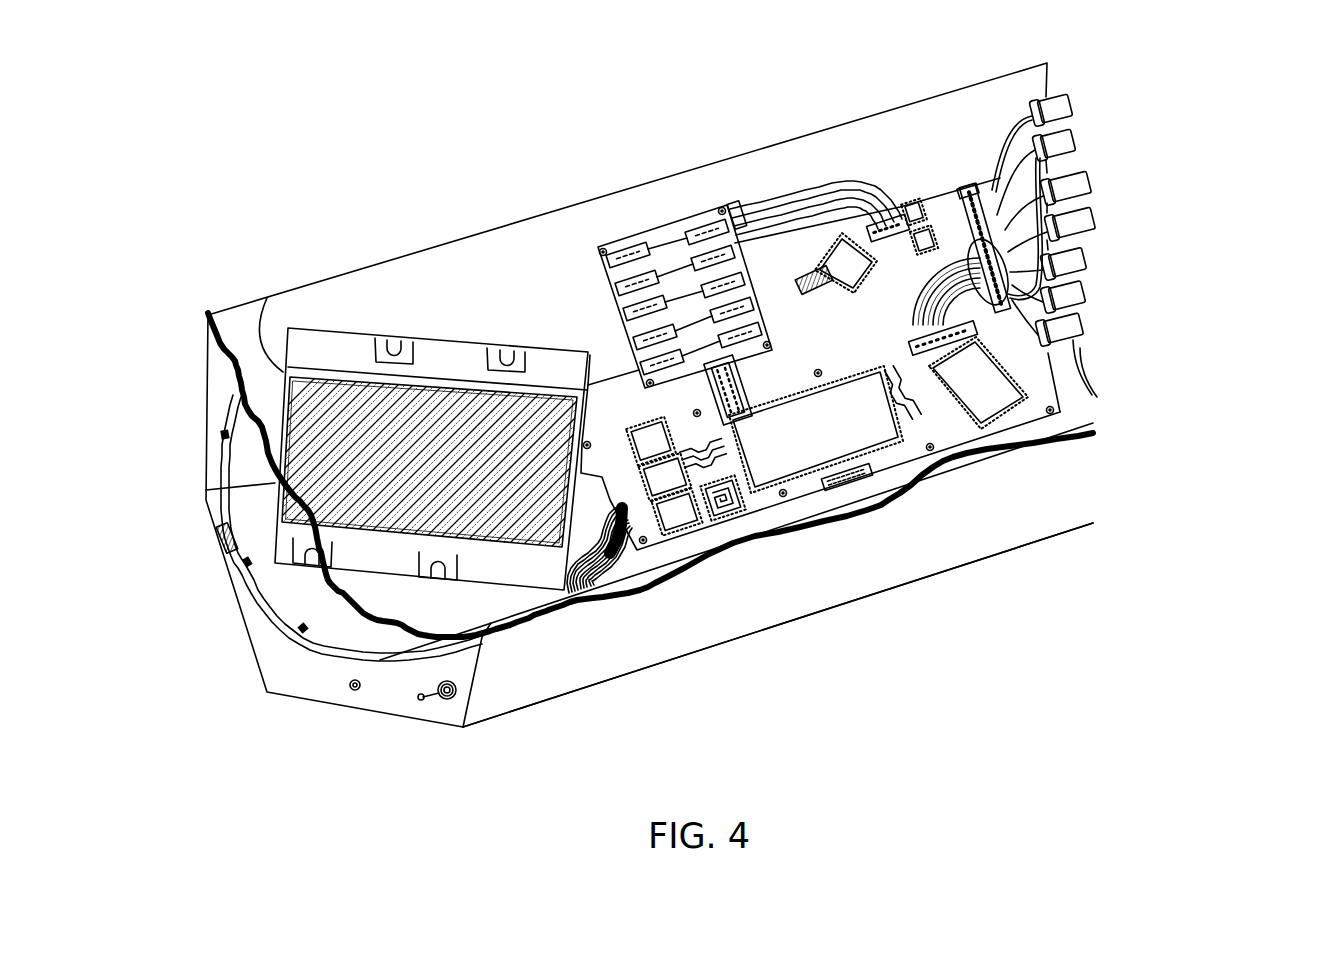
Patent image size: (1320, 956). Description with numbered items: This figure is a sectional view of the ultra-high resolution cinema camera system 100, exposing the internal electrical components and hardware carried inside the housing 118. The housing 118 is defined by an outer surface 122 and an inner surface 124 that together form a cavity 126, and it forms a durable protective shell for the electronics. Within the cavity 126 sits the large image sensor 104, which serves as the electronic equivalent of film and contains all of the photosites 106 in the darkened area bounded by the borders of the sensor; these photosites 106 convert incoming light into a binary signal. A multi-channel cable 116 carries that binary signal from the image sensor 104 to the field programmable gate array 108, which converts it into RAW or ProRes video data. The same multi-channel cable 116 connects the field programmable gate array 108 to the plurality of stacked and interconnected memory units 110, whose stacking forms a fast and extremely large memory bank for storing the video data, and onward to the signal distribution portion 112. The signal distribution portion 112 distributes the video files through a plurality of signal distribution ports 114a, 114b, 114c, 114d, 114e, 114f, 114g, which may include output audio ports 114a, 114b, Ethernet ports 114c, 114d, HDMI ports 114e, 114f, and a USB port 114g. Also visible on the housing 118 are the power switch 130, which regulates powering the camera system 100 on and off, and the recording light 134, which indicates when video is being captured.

The ultra-high resolution cinema camera system 100 is at (250, 116).
The image sensor 104 is at (466, 375).
The photosites 106 is at (258, 352).
The field programmable gate array 108 is at (820, 364).
The stacked and interconnected memory units 110 is at (635, 245).
The signal distribution portion 112 is at (917, 286).
The signal distribution port 114a is at (1067, 100).
The signal distribution port 114b is at (1070, 143).
The signal distribution port 114c is at (1090, 187).
The signal distribution port 114d is at (1093, 227).
The signal distribution port 114e is at (1087, 267).
The signal distribution port 114f is at (1083, 300).
The signal distribution port 114g is at (1083, 333).
The multi-channel cable 116 is at (802, 207).
The housing 118 is at (752, 641).
The outer surface 122 is at (892, 592).
The inner surface 124 is at (472, 620).
The cavity 126 is at (506, 614).
The power switch 130 is at (453, 700).
The recording light 134 is at (353, 692).